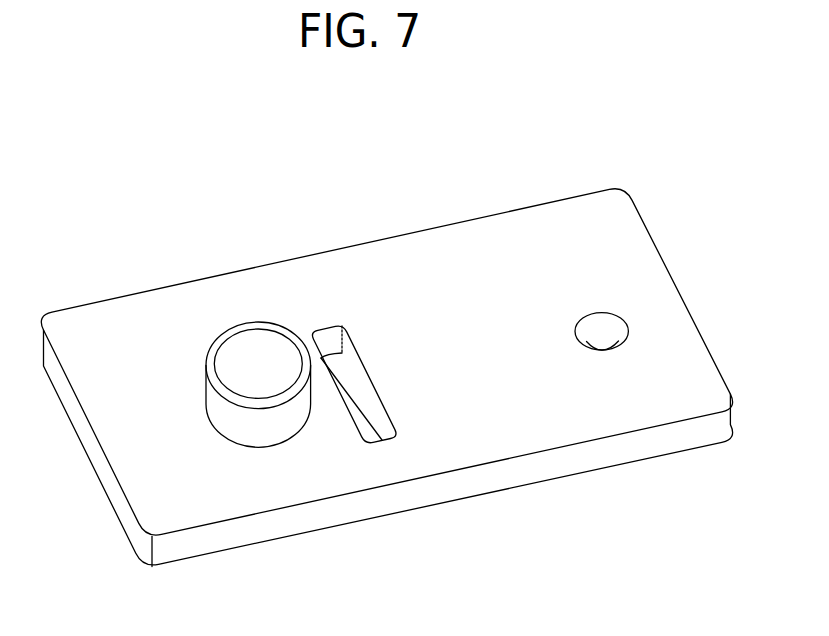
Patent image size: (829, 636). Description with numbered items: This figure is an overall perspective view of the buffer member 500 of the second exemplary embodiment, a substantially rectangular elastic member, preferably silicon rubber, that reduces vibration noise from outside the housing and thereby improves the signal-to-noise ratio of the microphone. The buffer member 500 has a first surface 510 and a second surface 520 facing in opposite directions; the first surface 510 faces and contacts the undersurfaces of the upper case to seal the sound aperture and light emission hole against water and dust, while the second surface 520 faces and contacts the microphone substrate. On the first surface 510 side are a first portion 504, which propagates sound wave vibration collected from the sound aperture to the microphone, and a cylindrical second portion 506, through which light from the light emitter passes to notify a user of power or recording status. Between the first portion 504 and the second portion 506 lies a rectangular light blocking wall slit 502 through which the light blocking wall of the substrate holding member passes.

The buffer member 500 is at (383, 379).
The light blocking wall slit 502 is at (340, 377).
The first portion 504 is at (467, 335).
The second portion 506 is at (238, 358).
The first surface 510 is at (157, 517).
The second surface 520 is at (205, 560).